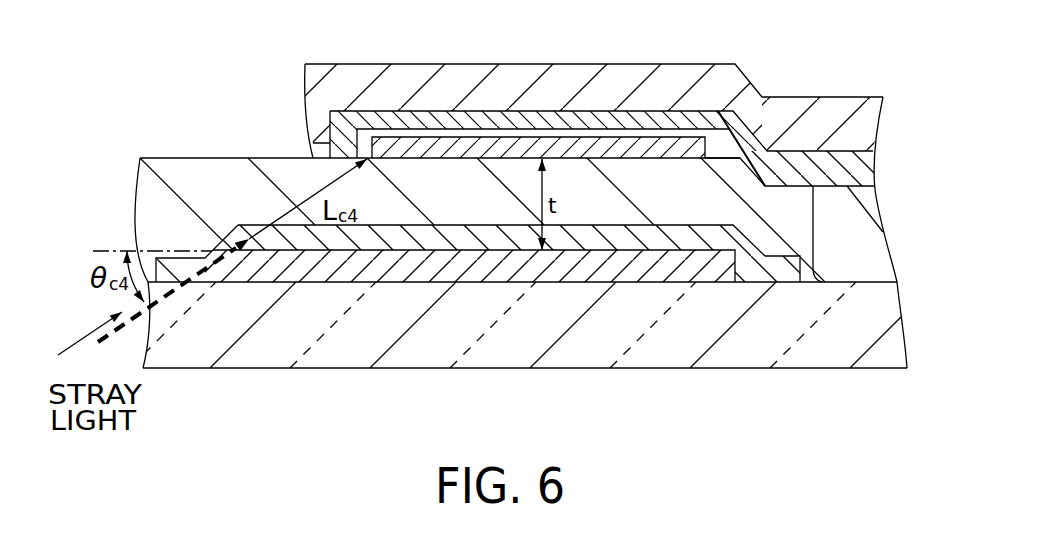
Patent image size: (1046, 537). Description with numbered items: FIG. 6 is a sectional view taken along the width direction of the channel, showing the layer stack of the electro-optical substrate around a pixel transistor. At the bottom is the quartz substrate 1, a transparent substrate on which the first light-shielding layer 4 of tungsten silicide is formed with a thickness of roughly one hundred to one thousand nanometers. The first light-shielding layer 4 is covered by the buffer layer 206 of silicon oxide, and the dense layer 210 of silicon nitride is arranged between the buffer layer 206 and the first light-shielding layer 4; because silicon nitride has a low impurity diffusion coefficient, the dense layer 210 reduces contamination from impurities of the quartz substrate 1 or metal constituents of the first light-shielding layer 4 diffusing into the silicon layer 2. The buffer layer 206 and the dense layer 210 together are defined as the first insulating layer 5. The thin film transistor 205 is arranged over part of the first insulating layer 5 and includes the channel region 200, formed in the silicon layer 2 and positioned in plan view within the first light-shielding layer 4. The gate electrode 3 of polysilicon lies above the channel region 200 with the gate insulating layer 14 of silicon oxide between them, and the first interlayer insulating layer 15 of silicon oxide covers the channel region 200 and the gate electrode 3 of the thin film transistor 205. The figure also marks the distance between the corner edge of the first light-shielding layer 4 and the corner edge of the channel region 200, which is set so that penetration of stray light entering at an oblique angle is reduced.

The quartz substrate 1 is at (886, 312).
The gate electrode 3 is at (860, 169).
The first light-shielding layer 4 is at (605, 283).
The first insulating layer 5 is at (817, 231).
The gate insulating layer 14 is at (752, 133).
The first interlayer insulating layer 15 is at (868, 116).
The channel region 200 is at (538, 89).
The silicon layer 2 is at (555, 147).
The thin film transistor 205 is at (297, 65).
The buffer layer 206 is at (762, 231).
The dense layer 210 is at (782, 268).